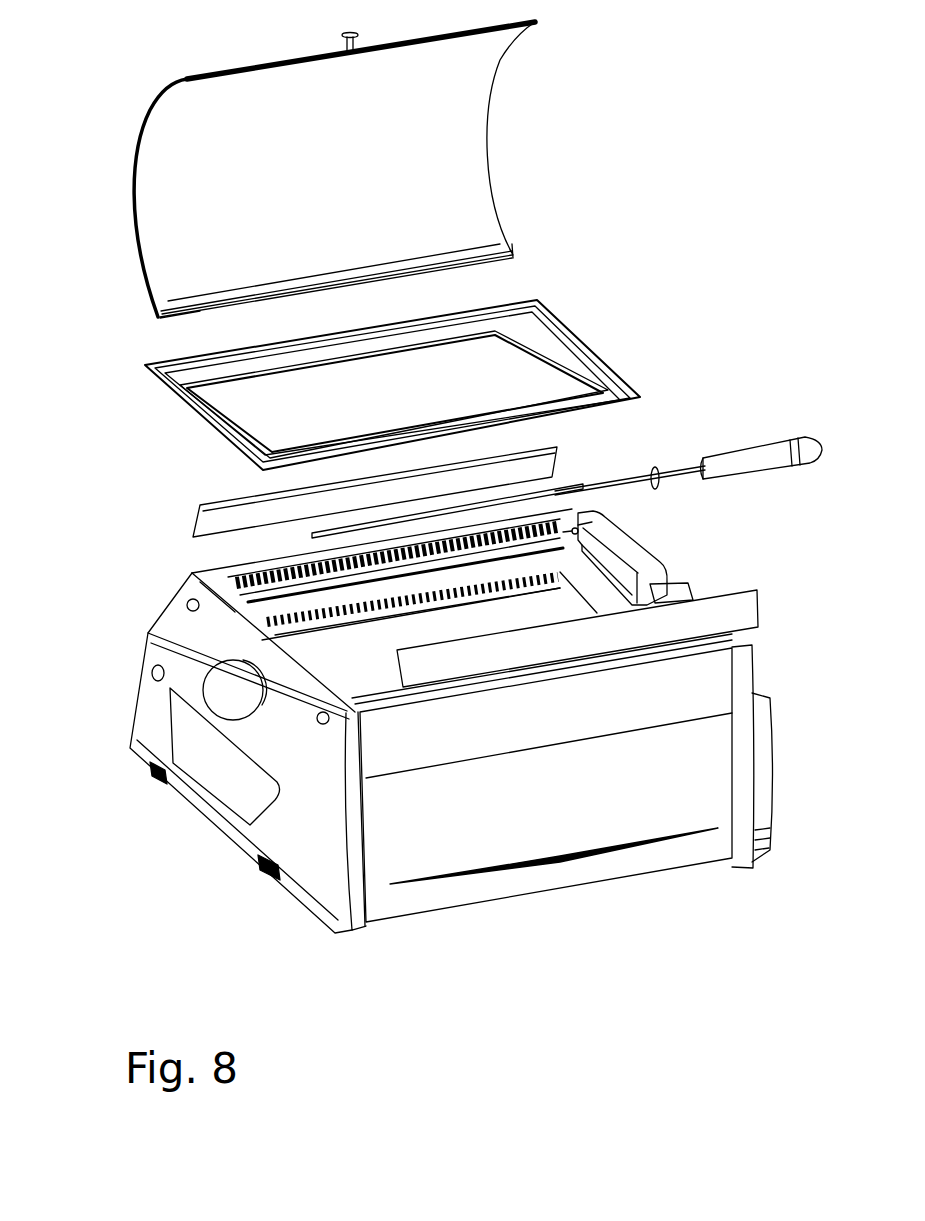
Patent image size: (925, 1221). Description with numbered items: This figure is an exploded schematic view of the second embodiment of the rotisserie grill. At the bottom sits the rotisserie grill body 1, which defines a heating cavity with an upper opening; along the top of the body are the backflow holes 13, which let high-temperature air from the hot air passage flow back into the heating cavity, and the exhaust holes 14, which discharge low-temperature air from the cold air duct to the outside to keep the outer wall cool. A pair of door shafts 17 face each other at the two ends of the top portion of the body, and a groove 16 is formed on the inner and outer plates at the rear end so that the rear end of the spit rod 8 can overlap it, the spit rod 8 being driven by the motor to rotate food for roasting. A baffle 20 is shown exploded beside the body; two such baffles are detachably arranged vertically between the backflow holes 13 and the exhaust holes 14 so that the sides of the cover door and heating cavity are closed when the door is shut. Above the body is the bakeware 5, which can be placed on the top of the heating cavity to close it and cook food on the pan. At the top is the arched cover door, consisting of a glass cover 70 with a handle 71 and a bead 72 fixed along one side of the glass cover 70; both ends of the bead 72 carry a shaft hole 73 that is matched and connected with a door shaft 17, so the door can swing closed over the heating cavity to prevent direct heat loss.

The rotisserie grill body 1 is at (558, 812).
The bakeware 5 is at (477, 392).
The spit rod 8 is at (682, 468).
The backflow holes 13 is at (500, 585).
The exhaust holes 14 is at (238, 580).
The groove 16 is at (667, 583).
The door shaft 17 is at (573, 532).
The baffle 20 is at (743, 613).
The glass cover 70 is at (178, 157).
The handle 71 is at (347, 42).
The bead 72 is at (180, 305).
The shaft hole 73 is at (158, 315).